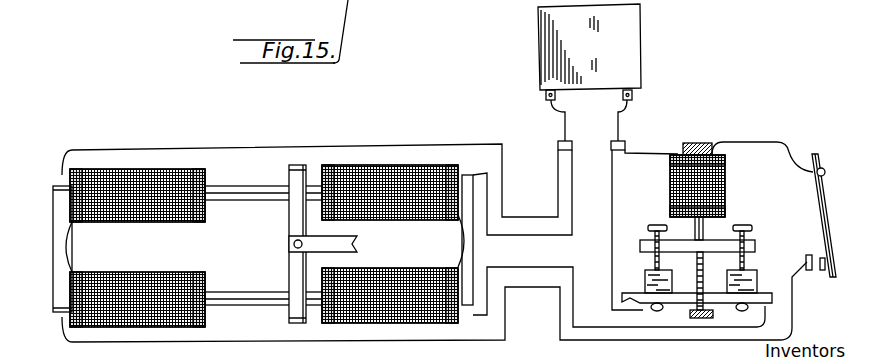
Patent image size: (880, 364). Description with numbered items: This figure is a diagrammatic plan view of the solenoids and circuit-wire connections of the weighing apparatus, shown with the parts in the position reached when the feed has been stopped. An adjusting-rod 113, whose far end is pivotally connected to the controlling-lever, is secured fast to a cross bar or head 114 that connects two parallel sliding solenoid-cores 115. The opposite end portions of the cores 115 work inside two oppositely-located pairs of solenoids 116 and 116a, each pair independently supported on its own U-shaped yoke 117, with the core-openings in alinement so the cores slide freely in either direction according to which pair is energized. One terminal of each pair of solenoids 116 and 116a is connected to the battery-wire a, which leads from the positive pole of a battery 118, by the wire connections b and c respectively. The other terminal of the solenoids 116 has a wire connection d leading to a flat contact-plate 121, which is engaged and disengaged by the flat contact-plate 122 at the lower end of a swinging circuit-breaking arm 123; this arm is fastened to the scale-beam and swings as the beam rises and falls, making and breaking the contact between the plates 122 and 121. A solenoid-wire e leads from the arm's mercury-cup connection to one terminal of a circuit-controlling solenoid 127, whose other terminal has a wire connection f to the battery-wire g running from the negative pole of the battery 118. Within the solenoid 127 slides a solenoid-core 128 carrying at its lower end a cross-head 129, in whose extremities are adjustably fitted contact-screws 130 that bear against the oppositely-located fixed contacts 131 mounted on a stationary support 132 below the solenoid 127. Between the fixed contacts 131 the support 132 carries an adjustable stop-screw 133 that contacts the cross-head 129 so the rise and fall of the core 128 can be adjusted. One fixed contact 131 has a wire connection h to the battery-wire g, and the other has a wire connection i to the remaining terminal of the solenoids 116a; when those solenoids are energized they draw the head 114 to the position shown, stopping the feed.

The adjusting-rod 113 is at (304, 250).
The cross bar or head 114 is at (293, 218).
The sliding solenoid-cores 115 is at (258, 192).
The solenoids 116 is at (132, 280).
The solenoids 116a is at (392, 234).
The U-shaped yoke 117 is at (58, 186).
The battery 118 is at (589, 52).
The flat contact-plate 121 is at (806, 261).
The flat contact-plate 122 is at (827, 270).
The circuit-breaking arm 123 is at (824, 232).
The circuit-controlling solenoid 127 is at (727, 184).
The sliding solenoid-core 128 is at (712, 226).
The cross-head 129 is at (757, 243).
The contact-screws 130 is at (657, 224).
The fixed contacts 131 is at (645, 281).
The stationary support 132 is at (678, 303).
The adjustable stop-screw 133 is at (705, 319).
The battery-wire a is at (565, 127).
The wire connection b is at (345, 148).
The wire connection c is at (573, 197).
The wire connection d is at (286, 341).
The solenoid-wire e is at (758, 142).
The wire connection f is at (651, 153).
The battery-wire g is at (618, 128).
The wire connection h is at (612, 240).
The wire connection i is at (600, 327).